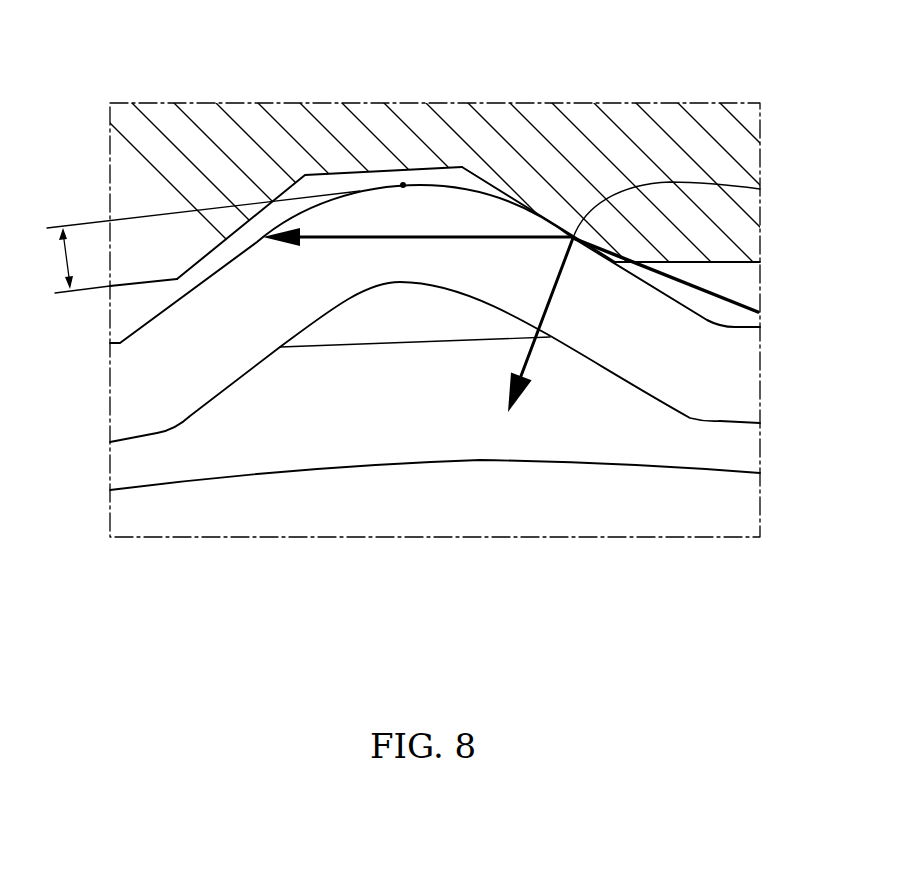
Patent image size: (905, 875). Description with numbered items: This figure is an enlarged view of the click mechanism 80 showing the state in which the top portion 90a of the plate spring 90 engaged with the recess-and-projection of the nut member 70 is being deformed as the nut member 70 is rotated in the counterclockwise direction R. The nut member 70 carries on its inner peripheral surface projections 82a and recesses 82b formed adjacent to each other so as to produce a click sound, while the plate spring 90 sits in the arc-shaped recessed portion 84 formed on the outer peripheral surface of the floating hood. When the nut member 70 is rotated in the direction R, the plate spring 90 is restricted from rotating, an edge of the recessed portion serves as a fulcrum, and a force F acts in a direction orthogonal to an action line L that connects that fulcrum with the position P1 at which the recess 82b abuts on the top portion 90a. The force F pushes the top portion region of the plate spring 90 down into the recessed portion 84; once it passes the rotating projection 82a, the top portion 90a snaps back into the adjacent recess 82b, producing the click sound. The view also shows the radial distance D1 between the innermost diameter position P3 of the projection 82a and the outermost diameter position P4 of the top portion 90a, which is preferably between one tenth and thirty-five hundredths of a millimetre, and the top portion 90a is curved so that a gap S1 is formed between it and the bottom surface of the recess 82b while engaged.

The click mechanism 80 is at (566, 76).
The nut member 70 is at (635, 128).
The projection 82a is at (125, 278).
The recess 82b is at (331, 173).
The innermost diameter position of the projection P3 is at (127, 288).
The radial distance D1 is at (197, 240).
The gap S1 is at (377, 177).
The outermost diameter position of the top portion P4 is at (403, 182).
The abutting position P1 is at (717, 187).
The counterclockwise direction R is at (313, 241).
The force F is at (552, 303).
The action line L is at (730, 295).
The arc-shaped recessed portion 84 is at (310, 468).
The top portion 90a is at (357, 273).
The plate spring 90 is at (143, 417).